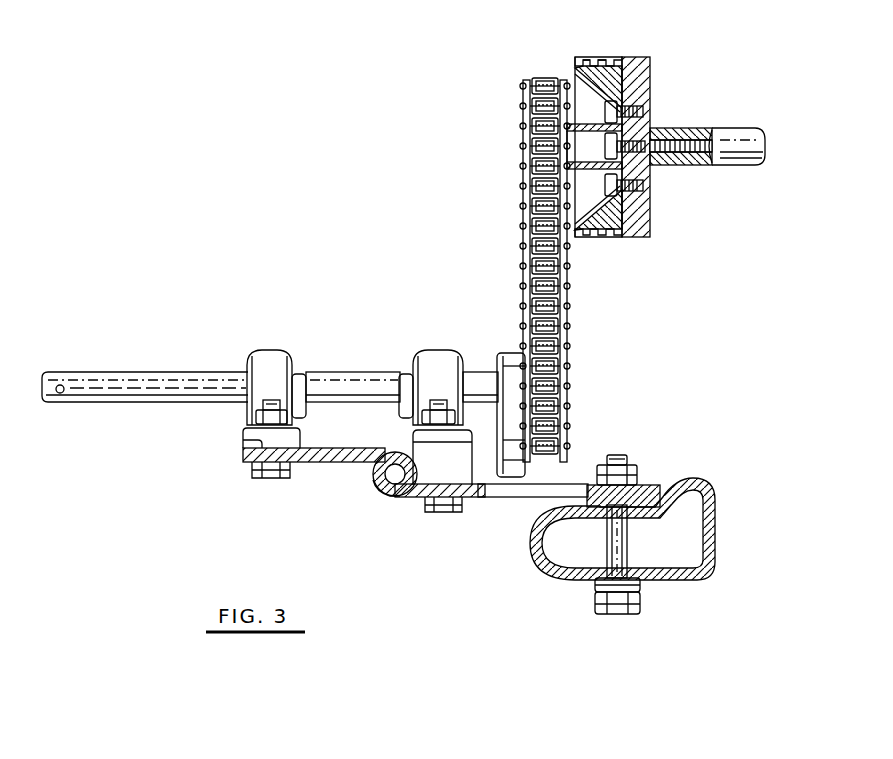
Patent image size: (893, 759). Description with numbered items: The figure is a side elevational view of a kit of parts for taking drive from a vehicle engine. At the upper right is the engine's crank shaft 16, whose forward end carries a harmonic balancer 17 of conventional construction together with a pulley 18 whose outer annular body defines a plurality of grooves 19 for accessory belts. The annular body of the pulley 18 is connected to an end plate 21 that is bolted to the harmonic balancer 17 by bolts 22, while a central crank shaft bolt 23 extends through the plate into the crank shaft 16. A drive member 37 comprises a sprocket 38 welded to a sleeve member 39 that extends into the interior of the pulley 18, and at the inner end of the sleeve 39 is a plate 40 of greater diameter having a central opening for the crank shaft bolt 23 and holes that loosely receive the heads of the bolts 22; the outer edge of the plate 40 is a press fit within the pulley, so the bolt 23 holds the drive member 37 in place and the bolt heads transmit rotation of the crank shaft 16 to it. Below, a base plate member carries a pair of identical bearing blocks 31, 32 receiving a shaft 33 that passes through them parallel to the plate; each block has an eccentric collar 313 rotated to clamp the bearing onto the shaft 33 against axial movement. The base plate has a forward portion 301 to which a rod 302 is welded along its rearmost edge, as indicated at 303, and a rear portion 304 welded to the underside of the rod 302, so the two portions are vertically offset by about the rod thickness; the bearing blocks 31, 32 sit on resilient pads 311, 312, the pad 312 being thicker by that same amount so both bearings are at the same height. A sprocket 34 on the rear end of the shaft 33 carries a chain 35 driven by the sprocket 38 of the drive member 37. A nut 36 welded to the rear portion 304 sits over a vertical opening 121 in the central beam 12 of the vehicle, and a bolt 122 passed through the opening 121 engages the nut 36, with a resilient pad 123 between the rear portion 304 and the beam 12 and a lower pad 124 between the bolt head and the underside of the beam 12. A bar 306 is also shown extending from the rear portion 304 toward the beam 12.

The central beam 12 is at (688, 578).
The crank shaft 16 is at (746, 136).
The harmonic balancer 17 is at (640, 72).
The pulley 18 is at (608, 60).
The grooves 19 is at (599, 58).
The end plate 21 is at (632, 106).
The bolts 22 is at (660, 165).
The crank shaft bolt 23 is at (640, 190).
The bearing block 31 is at (270, 360).
The bearing block 32 is at (436, 360).
The shaft 33 is at (160, 388).
The sprocket 34 is at (505, 365).
The chain 35 is at (578, 312).
The nut 36 is at (628, 470).
The drive member 37 is at (524, 156).
The sprocket 38 is at (537, 106).
The sleeve member 39 is at (578, 121).
The plate 40 is at (607, 162).
The vertical opening 121 is at (630, 522).
The bolt 122 is at (617, 615).
The resilient pad 123 is at (585, 490).
The lower pad 124 is at (595, 584).
The forward portion 301 is at (320, 456).
The rod 302 is at (378, 490).
The weld 303 is at (393, 455).
The rear portion 304 is at (418, 495).
The mounting bar 306 is at (527, 494).
The resilient pad 311 is at (262, 440).
The resilient pad 312 is at (456, 464).
The collar 313 is at (296, 380).